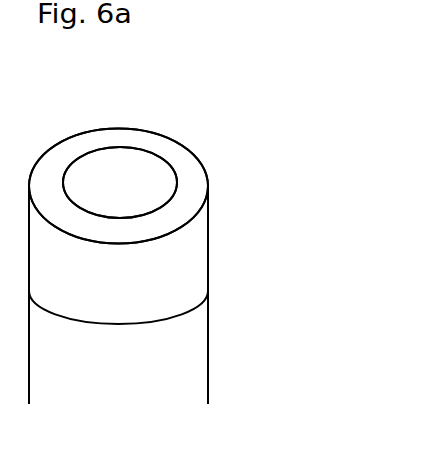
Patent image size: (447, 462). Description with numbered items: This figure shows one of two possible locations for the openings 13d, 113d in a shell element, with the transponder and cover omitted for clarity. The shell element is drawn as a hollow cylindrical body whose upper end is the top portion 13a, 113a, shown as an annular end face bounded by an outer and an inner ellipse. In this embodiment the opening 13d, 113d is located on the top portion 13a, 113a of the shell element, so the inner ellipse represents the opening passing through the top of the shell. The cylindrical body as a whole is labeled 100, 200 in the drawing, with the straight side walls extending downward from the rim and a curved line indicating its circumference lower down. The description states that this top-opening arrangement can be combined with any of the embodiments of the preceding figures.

The opening 13d is at (186, 125).
The opening 113d is at (127, 173).
The top portion 13a is at (209, 165).
The top portion 113a is at (192, 185).
The tubular element / cylinder 100 is at (189, 287).
The tubular element / cylinder 200 is at (175, 348).